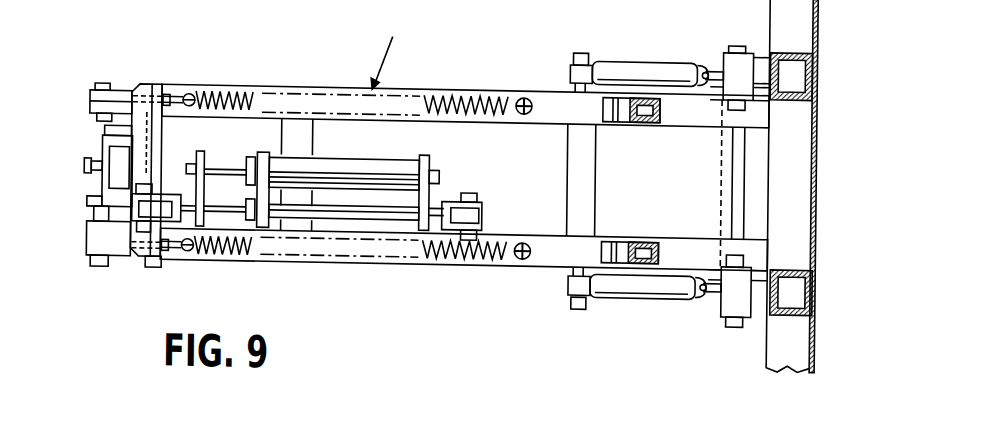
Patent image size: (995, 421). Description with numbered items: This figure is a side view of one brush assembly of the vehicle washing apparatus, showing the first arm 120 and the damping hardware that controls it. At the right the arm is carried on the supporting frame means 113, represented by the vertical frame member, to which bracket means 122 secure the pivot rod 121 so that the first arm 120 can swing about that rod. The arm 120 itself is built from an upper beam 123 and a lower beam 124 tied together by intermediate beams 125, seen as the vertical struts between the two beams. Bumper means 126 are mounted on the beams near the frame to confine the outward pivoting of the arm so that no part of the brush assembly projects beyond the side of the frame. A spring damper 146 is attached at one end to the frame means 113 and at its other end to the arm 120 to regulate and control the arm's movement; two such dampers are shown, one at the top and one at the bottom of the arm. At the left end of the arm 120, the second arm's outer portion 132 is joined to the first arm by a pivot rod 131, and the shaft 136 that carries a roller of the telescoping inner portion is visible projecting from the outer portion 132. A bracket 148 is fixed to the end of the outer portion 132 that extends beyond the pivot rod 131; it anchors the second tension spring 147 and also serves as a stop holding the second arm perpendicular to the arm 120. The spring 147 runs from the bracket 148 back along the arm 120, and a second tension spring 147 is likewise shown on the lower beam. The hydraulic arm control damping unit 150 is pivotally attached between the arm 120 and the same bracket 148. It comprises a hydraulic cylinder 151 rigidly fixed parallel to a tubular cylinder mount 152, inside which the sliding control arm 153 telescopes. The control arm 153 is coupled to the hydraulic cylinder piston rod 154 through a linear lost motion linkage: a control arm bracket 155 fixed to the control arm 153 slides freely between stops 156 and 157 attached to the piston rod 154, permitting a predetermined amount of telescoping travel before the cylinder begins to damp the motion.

The frame means 113 is at (805, 6).
The first arm 120 is at (393, 52).
The pivot rod 121 is at (723, 166).
The bracket means 122 is at (762, 54).
The upper beam 123 is at (336, 83).
The lower beam 124 is at (398, 258).
The intermediate beams 125 is at (307, 139).
The bumper means 126 is at (608, 111).
The pivot rod 131 is at (112, 137).
The outer portion 132 is at (103, 190).
The shaft 136 is at (85, 167).
The spring damper 146 is at (628, 54).
The second tension spring 147 is at (462, 87).
The bracket 148 is at (147, 86).
The hydraulic arm control damping unit 150 is at (320, 170).
The hydraulic cylinder 151 is at (375, 164).
The tubular cylinder mount 152 is at (378, 225).
The sliding control arm 153 is at (220, 205).
The hydraulic cylinder piston rod 154 is at (228, 175).
The control arm bracket 155 is at (224, 156).
The stop 156 is at (195, 150).
The stop 157 is at (248, 156).